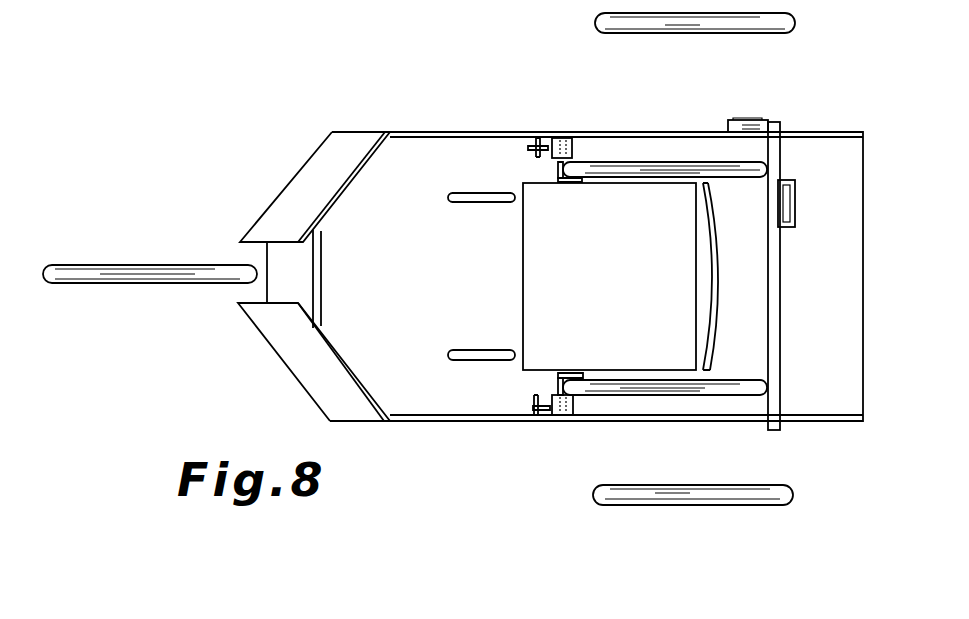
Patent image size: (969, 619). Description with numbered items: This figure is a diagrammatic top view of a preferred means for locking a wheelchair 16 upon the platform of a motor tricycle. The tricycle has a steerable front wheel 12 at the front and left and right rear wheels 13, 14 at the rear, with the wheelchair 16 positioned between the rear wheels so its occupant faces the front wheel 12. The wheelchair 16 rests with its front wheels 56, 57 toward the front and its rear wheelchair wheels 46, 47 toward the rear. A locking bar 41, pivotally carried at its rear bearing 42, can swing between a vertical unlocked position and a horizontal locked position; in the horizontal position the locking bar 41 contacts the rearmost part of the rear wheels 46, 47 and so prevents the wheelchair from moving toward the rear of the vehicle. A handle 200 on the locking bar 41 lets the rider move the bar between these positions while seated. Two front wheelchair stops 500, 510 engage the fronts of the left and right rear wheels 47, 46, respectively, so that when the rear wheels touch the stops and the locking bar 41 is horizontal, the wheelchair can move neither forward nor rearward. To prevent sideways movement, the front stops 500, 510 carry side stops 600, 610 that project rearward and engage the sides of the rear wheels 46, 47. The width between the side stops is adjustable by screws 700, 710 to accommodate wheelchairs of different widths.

The steerable front wheel 12 is at (142, 268).
The left rear wheel 13 is at (680, 493).
The right rear wheel 14 is at (780, 23).
The wheelchair 16 is at (518, 255).
The locking bar 41 is at (775, 268).
The rear bearing 42 is at (748, 119).
The right rear wheelchair wheel 46 is at (643, 383).
The left rear wheelchair wheel 47 is at (623, 168).
The front wheelchair wheel 56 is at (467, 357).
The front wheelchair wheel 57 is at (470, 198).
The handle 200 is at (792, 203).
The front wheelchair stop 500 is at (558, 170).
The front wheelchair stop 510 is at (558, 392).
The side stop 600 is at (572, 184).
The side stop 610 is at (592, 335).
The screw 700 is at (532, 140).
The screw 710 is at (533, 415).